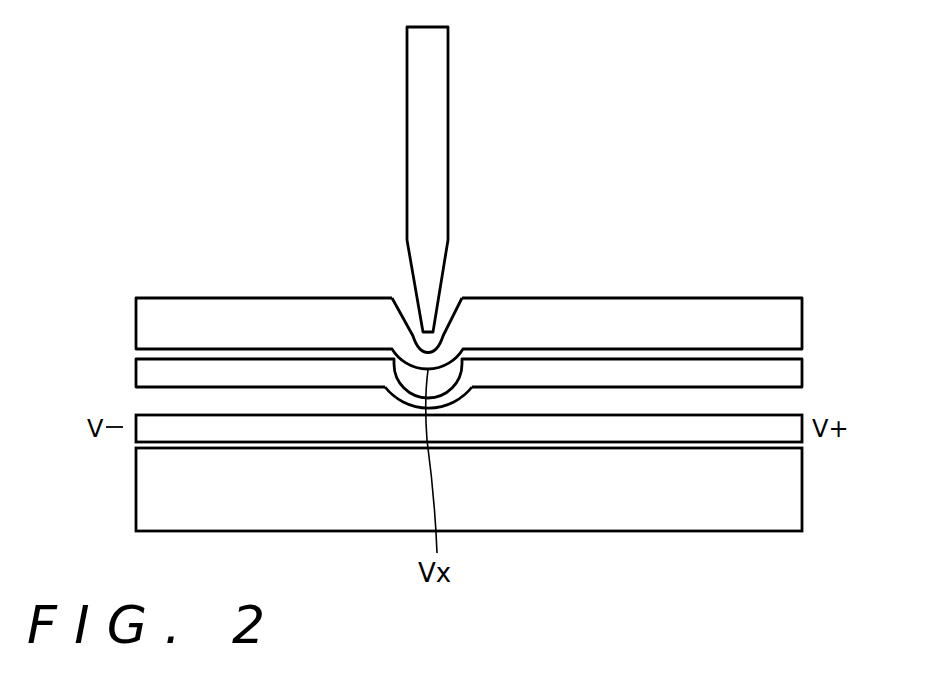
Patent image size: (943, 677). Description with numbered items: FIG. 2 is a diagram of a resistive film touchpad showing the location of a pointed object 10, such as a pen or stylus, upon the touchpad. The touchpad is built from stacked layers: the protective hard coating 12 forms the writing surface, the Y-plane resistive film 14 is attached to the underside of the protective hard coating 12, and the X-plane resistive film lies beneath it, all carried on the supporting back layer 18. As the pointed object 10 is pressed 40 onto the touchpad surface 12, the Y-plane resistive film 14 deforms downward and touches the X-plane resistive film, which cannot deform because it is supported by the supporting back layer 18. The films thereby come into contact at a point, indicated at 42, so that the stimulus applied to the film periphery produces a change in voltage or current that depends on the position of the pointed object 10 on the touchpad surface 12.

The pointed object 10 is at (448, 132).
The protective hard coating 12 is at (785, 322).
The Y-plane resistive film 14 is at (785, 372).
The supporting back layer 18 is at (780, 482).
The pressing 40 is at (448, 310).
The contact point 42 is at (404, 410).